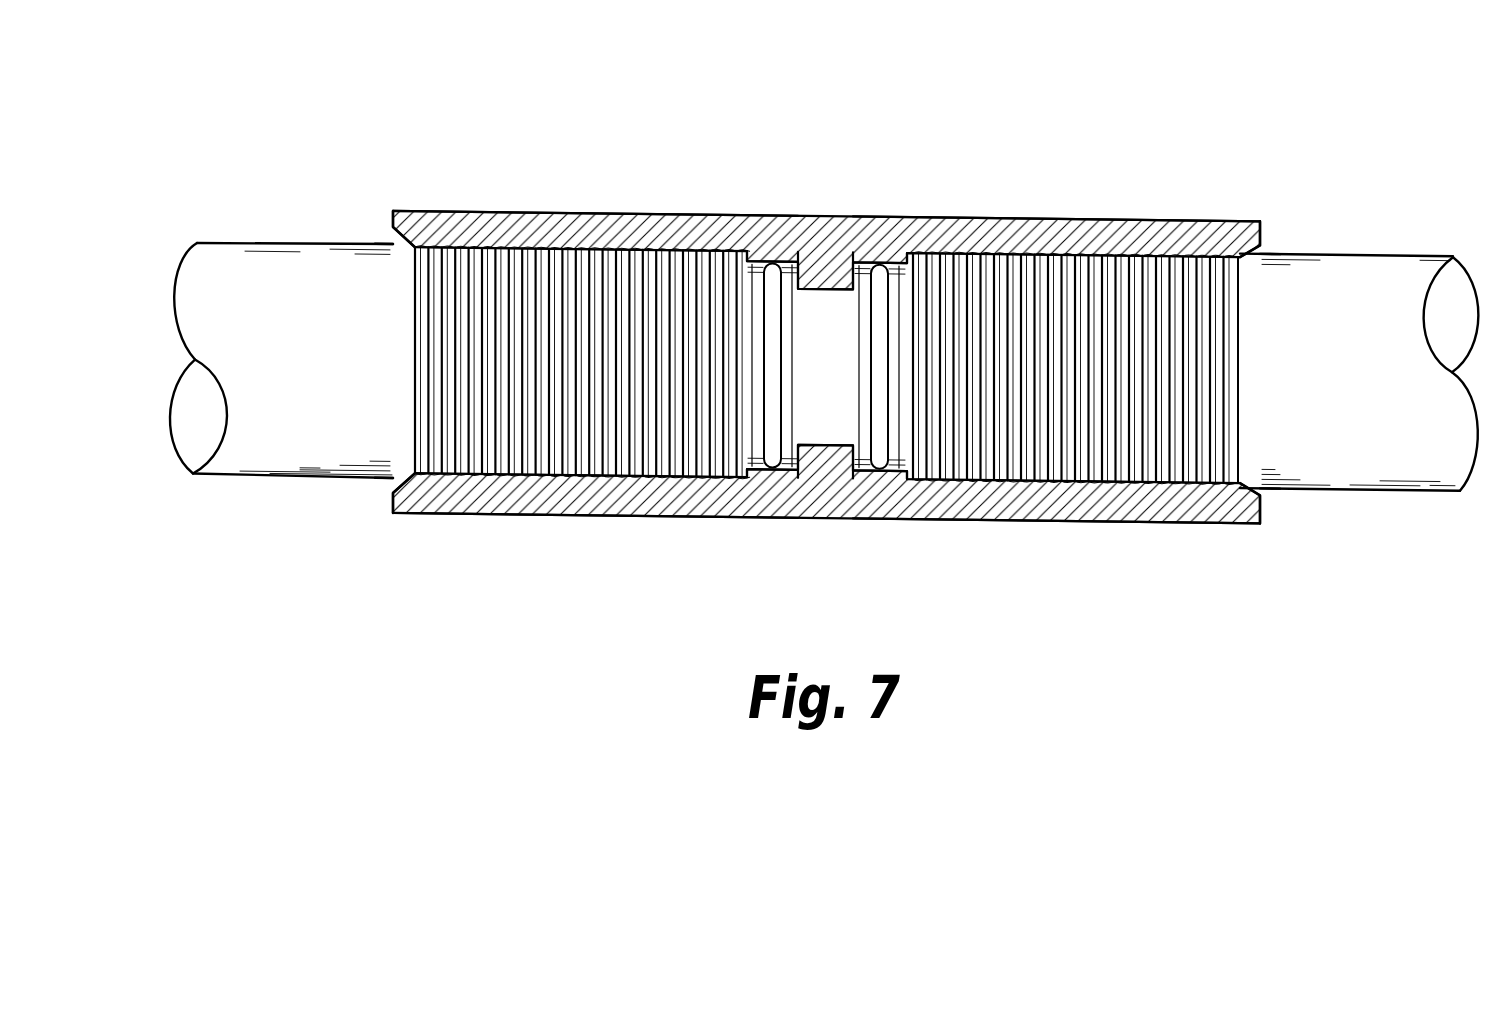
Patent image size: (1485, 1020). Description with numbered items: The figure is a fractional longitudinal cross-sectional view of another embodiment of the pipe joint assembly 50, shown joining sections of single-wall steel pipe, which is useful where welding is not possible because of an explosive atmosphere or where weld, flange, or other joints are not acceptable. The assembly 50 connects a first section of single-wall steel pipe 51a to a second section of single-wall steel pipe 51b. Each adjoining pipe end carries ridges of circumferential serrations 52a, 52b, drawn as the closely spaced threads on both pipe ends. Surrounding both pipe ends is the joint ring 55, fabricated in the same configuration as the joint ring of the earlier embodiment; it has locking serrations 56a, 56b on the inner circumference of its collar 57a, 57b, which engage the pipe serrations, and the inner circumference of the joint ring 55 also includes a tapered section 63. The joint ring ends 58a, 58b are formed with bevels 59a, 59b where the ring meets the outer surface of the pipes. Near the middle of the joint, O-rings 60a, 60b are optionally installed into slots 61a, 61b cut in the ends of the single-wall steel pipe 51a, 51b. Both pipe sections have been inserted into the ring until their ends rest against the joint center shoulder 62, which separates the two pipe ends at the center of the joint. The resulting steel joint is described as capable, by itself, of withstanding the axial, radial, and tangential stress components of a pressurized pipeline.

The pipe joint assembly 50 is at (972, 82).
The first section of single-wall steel pipe 51a is at (249, 243).
The second section of single-wall steel pipe 51b is at (1413, 255).
The circumferential serrations 52a is at (688, 478).
The circumferential serrations 52b is at (995, 478).
The joint ring 55 is at (855, 517).
The locking serrations 56a is at (643, 250).
The locking serrations 56b is at (1005, 250).
The collar 57a is at (543, 215).
The collar 57b is at (1085, 220).
The joint ring end 58a is at (393, 214).
The joint ring end 58b is at (1268, 240).
The bevel 59a is at (390, 240).
The bevel 59b is at (1278, 250).
The O-ring 60a is at (760, 262).
The O-ring 60b is at (873, 262).
The slot 61a is at (780, 470).
The slot 61b is at (900, 470).
The joint center shoulder 62 is at (825, 287).
The tapered section 63 is at (568, 478).